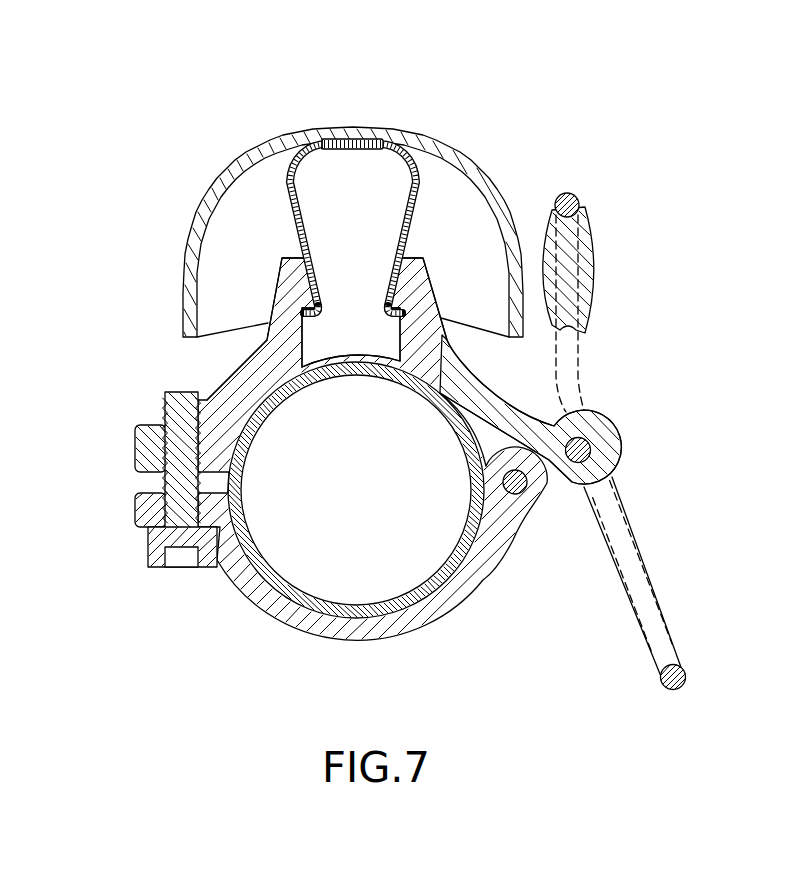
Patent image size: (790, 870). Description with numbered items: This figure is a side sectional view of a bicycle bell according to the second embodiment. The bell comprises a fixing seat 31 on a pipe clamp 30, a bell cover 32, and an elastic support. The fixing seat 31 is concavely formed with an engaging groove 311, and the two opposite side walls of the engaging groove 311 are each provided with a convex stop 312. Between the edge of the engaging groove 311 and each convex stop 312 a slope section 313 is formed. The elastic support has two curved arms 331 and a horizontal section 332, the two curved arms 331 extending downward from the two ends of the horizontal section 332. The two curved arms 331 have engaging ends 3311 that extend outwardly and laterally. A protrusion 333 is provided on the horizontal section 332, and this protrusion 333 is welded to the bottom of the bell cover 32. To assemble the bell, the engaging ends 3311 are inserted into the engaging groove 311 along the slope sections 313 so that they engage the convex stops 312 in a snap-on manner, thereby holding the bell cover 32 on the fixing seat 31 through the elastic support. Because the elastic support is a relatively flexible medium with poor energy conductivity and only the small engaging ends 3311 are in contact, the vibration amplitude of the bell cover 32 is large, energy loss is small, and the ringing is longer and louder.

The pipe clamp 30 is at (237, 393).
The fixing seat 31 is at (285, 327).
The engaging groove 311 is at (352, 272).
The convex stop 312 is at (318, 282).
The slope section 313 is at (383, 257).
The bell cover 32 is at (437, 150).
The curved arm 331 is at (372, 191).
The horizontal section 332 is at (304, 147).
The protrusion 333 is at (364, 141).
The engaging end 3311 is at (277, 303).